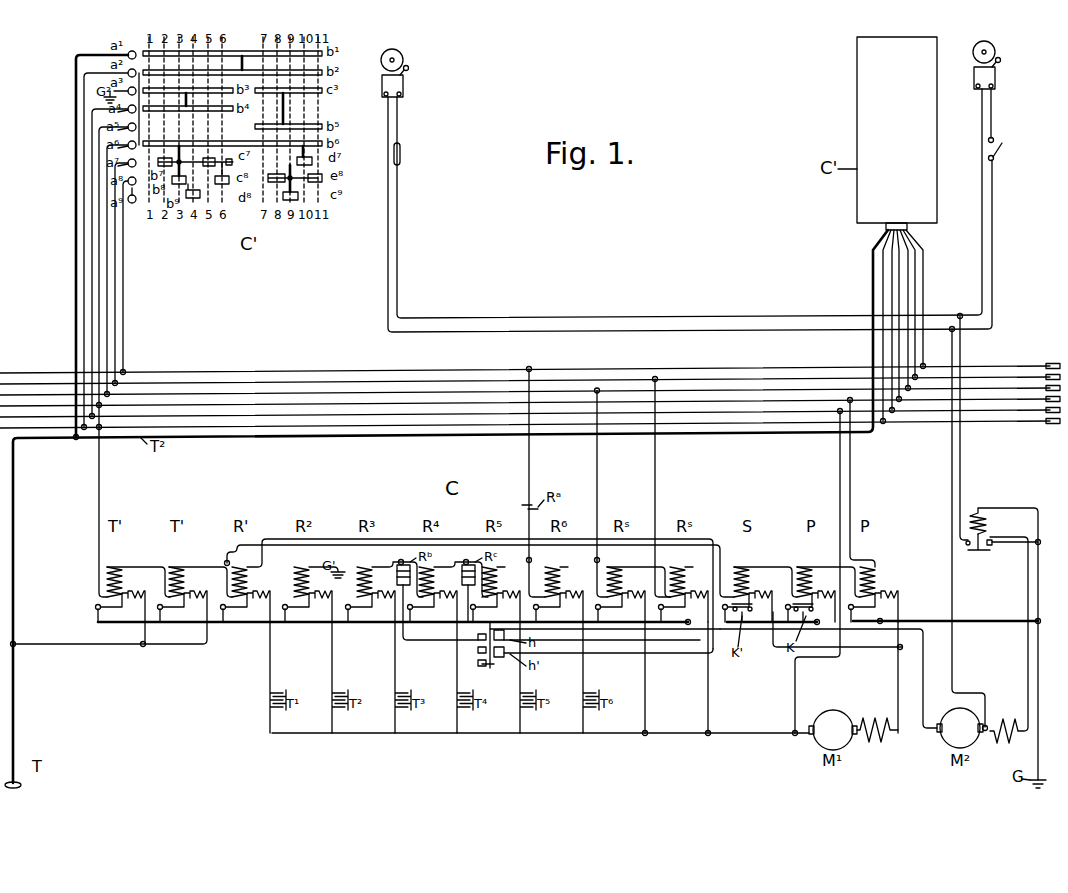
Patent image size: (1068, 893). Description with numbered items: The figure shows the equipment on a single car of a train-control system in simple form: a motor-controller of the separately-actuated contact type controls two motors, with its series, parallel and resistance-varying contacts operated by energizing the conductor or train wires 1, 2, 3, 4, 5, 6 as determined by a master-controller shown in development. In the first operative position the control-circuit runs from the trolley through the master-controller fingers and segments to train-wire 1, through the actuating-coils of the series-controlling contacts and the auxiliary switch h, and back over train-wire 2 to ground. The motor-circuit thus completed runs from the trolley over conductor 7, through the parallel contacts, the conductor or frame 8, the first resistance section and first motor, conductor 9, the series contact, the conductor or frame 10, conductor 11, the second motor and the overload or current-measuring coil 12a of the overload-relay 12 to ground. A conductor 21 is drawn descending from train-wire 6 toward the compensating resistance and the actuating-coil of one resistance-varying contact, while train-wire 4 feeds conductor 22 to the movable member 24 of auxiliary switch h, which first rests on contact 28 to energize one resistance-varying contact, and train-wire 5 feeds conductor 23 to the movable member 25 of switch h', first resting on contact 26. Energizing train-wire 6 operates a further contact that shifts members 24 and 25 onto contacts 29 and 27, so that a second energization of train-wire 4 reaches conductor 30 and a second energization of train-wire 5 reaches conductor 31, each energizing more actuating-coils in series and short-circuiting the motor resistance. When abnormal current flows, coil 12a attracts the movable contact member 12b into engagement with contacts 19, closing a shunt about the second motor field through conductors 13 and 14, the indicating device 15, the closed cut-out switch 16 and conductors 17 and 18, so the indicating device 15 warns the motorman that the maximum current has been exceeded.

The train-wire 1 is at (192, 430).
The train-wire 2 is at (204, 419).
The train-wire 3 is at (218, 408).
The train-wire 4 is at (234, 397).
The train-wire 5 is at (253, 386).
The train-wire 6 is at (264, 375).
The conductor 7 is at (106, 646).
The conductor or frame 8 is at (254, 630).
The conductor 9 is at (882, 650).
The conductor or frame 10 is at (762, 634).
The conductor 11 is at (947, 655).
The overload-relay 12 is at (1002, 635).
The overload or current-measuring coil 12a is at (982, 513).
The movable contact member 12b is at (992, 556).
The conductor 13 is at (958, 617).
The conductor 14 is at (666, 334).
The indicating device 15 is at (700, 69).
The cut-out switch 16 is at (403, 156).
The conductor 17 is at (636, 318).
The conductor 18 is at (963, 476).
The contacts 19 is at (994, 545).
The conductor 21 is at (534, 483).
The conductor 22 is at (600, 500).
The conductor 23 is at (659, 494).
The movable member 24 is at (502, 630).
The movable member 25 is at (500, 660).
The contact 26 is at (480, 668).
The contact 27 is at (478, 662).
The contact 28 is at (478, 650).
The contact 29 is at (478, 637).
The conductor 30 is at (560, 628).
The conductor 31 is at (690, 654).